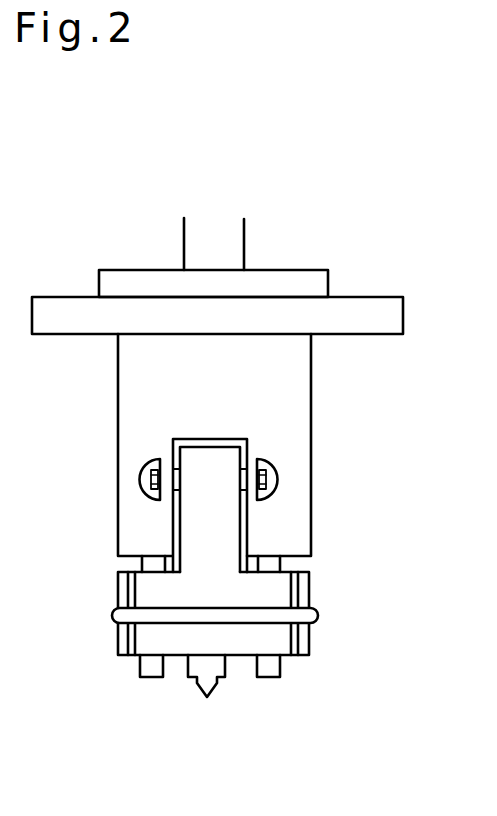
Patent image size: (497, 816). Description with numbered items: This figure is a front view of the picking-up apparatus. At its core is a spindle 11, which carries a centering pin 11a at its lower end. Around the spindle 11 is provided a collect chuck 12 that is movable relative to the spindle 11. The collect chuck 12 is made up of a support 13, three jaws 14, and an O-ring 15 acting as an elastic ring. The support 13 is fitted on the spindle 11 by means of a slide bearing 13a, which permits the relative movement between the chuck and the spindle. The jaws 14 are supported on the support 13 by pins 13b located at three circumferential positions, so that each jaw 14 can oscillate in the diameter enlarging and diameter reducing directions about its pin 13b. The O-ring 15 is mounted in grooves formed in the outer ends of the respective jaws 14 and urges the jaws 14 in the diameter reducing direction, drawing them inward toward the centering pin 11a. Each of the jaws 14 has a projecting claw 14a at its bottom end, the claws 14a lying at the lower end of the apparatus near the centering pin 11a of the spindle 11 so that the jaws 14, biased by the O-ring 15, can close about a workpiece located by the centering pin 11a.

The spindle 11 is at (247, 232).
The centering pin 11a is at (216, 685).
The collect chuck 12 is at (311, 567).
The support 13 is at (118, 385).
The slide bearing 13a is at (125, 268).
The pins 13b is at (150, 480).
The jaws 14 is at (187, 585).
The projecting claw 14a is at (196, 663).
The O-ring 15 is at (113, 610).